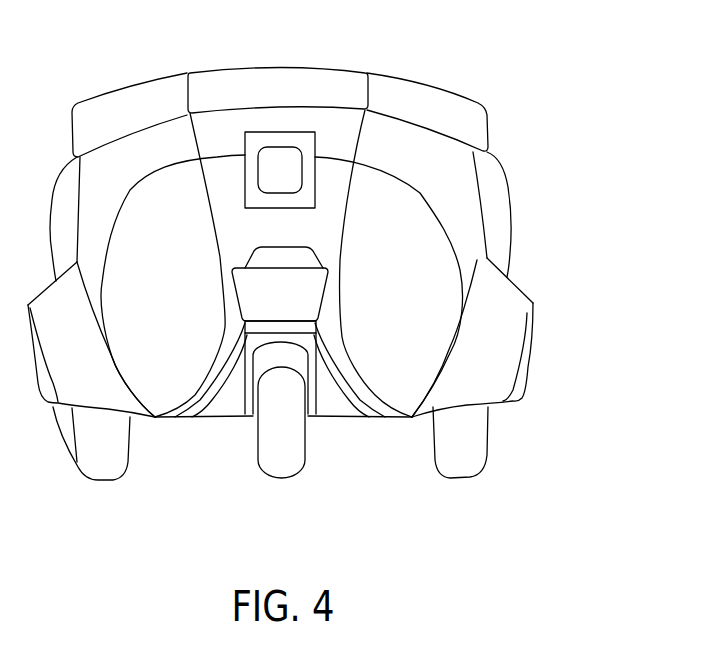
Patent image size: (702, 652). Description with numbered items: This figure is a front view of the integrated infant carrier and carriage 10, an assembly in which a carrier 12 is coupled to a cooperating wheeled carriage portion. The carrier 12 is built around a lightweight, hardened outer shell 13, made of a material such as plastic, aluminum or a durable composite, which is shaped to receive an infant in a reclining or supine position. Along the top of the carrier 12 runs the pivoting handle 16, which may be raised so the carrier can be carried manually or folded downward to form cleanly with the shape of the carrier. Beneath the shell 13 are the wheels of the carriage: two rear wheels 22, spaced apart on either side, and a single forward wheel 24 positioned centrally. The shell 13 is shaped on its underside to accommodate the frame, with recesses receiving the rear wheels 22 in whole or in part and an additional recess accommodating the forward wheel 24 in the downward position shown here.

The integrated infant carrier and carriage 10 is at (382, 24).
The carrier 12 is at (552, 164).
The outer shell 13 is at (455, 195).
The pivoting handle 16 is at (440, 100).
The rear wheels 22 is at (93, 468).
The forward wheel 24 is at (288, 455).